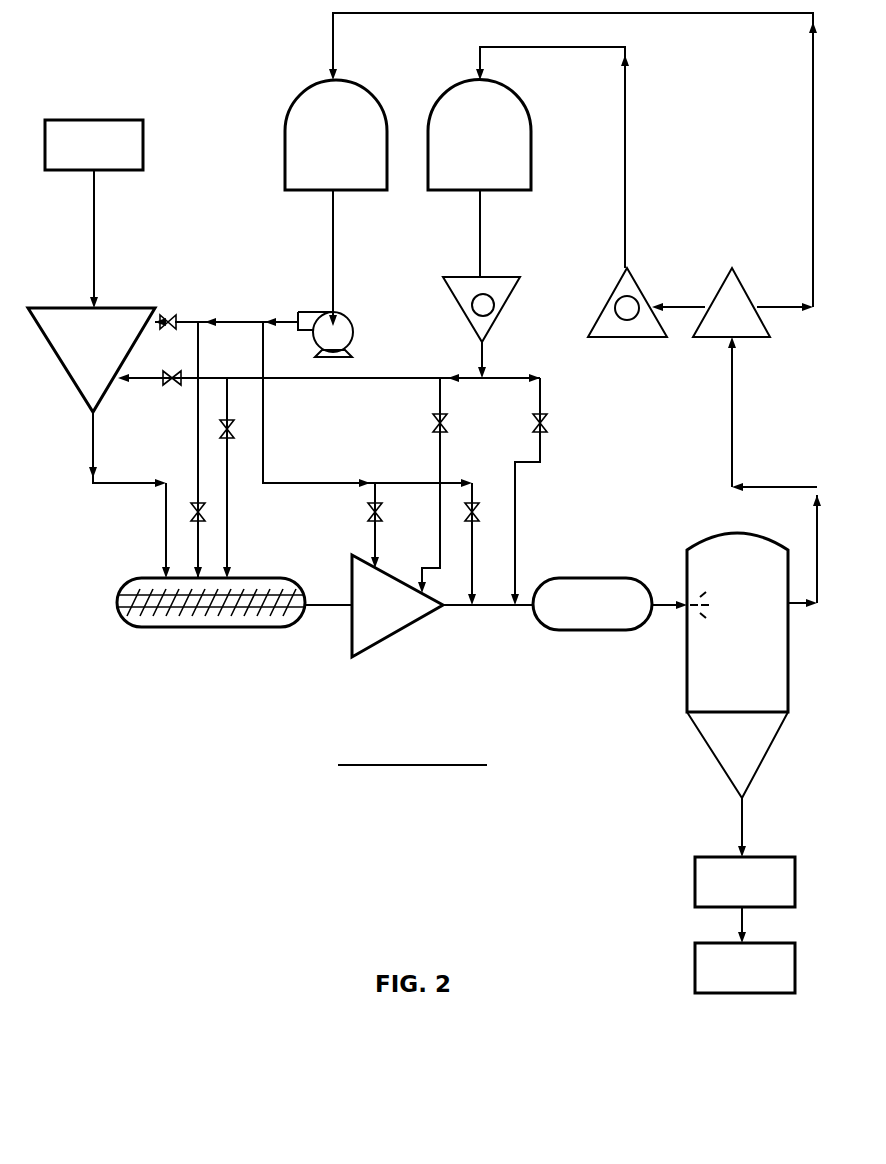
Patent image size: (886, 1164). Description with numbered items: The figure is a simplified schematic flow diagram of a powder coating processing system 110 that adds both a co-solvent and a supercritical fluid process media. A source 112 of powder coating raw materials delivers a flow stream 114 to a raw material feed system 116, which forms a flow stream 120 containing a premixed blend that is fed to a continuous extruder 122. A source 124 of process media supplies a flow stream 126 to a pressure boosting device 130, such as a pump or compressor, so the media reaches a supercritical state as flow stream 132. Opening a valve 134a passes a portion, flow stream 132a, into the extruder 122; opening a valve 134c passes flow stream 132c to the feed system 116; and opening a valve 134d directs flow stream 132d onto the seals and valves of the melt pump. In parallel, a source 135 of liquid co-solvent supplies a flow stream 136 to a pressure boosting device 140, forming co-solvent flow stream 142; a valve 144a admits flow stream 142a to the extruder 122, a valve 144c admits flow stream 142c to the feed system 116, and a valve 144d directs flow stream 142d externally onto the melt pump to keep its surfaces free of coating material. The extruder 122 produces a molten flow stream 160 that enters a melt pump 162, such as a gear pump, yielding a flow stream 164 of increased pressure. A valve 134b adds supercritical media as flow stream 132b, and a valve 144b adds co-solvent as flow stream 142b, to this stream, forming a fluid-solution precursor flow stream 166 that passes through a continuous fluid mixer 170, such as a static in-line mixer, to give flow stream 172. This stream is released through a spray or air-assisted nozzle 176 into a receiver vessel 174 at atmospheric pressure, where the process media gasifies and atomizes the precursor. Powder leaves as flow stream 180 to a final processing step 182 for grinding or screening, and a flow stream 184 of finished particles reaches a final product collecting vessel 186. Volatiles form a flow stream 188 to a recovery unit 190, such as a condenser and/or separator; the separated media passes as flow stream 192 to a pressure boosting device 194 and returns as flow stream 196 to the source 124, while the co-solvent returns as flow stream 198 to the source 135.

The powder coating processing system 110 is at (390, 765).
The source of powder coating raw materials 112 is at (75, 157).
The flow stream of raw materials 114 is at (120, 226).
The raw material feed system 116 is at (97, 361).
The flow stream of premixed blend 120 is at (120, 485).
The continuous extruder 122 is at (172, 630).
The source of process media 124 is at (460, 153).
The flow stream of process media 126 is at (480, 248).
The pressure boosting device 130 is at (453, 284).
The supercritical fluid process media flow stream 132 is at (484, 352).
The flow stream 132a is at (227, 515).
The flow stream 132b is at (515, 520).
The flow stream 132c is at (120, 380).
The flow stream 132d is at (420, 500).
The valve 134a is at (218, 428).
The valve 134b is at (534, 424).
The valve 134c is at (172, 371).
The valve 134d is at (432, 424).
The source of co-solvent 135 is at (315, 153).
The flow stream of co-solvent 136 is at (333, 248).
The pressure boosting device 140 is at (354, 322).
The co-solvent flow stream 142 is at (286, 318).
The flow stream 142a is at (198, 550).
The flow stream 142b is at (474, 565).
The flow stream 142c is at (146, 314).
The flow stream 142d is at (370, 538).
The valve 144a is at (195, 500).
The valve 144b is at (479, 502).
The valve 144c is at (171, 314).
The valve 144d is at (367, 514).
The flow stream of extruded product 160 is at (330, 607).
The melt pump 162 is at (366, 617).
The powder coating precursor flow stream of increased pressure 164 is at (455, 607).
The powder coating precursor flow stream 166 is at (530, 607).
The continuous fluid mixer 170 is at (572, 617).
The flow stream 172 is at (660, 607).
The receiver vessel 174 is at (718, 641).
The spray or air-assisted nozzle 176 is at (692, 600).
The flow stream of powder coating material 180 is at (744, 815).
The final processing step 182 is at (725, 895).
The flow stream of finished powder coating particles 184 is at (744, 920).
The final product collecting vessel 186 is at (725, 982).
The flow stream of volatiles 188 is at (778, 488).
The recovery unit 190 is at (713, 327).
The flow stream of process media 192 is at (704, 283).
The pressure boosting device 194 is at (609, 324).
The flow stream 196 is at (625, 188).
The flow stream of co-solvent 198 is at (813, 240).